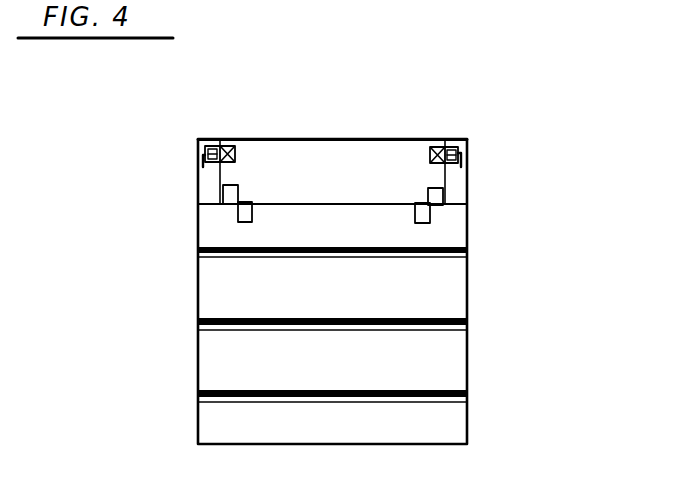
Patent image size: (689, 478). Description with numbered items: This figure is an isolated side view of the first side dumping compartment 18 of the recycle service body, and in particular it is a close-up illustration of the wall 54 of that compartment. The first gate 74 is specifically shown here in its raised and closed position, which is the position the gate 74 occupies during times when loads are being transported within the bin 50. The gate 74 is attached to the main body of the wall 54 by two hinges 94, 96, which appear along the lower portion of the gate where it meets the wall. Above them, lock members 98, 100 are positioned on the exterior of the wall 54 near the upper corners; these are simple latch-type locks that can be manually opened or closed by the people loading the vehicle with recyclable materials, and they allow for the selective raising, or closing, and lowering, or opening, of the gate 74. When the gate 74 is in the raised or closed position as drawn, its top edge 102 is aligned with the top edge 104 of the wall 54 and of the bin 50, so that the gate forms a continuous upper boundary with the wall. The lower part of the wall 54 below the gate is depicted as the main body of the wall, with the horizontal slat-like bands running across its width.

The first side dumping compartment 18 is at (350, 122).
The bin 50 is at (385, 132).
The first gate 74 is at (302, 163).
The top edge of gate 102 is at (265, 137).
The top edge of wall 104 is at (450, 140).
The lock member 100 is at (200, 152).
The lock member 98 is at (461, 152).
The hinge 96 is at (235, 210).
The hinge 94 is at (430, 218).
The wall 54 is at (342, 296).